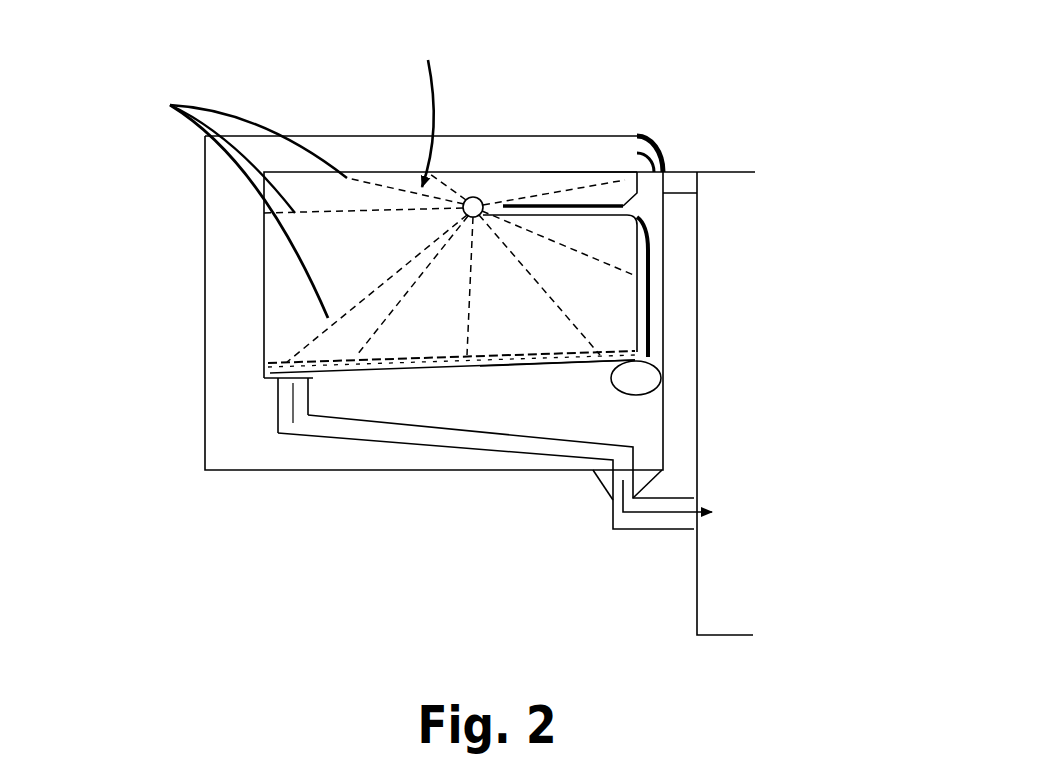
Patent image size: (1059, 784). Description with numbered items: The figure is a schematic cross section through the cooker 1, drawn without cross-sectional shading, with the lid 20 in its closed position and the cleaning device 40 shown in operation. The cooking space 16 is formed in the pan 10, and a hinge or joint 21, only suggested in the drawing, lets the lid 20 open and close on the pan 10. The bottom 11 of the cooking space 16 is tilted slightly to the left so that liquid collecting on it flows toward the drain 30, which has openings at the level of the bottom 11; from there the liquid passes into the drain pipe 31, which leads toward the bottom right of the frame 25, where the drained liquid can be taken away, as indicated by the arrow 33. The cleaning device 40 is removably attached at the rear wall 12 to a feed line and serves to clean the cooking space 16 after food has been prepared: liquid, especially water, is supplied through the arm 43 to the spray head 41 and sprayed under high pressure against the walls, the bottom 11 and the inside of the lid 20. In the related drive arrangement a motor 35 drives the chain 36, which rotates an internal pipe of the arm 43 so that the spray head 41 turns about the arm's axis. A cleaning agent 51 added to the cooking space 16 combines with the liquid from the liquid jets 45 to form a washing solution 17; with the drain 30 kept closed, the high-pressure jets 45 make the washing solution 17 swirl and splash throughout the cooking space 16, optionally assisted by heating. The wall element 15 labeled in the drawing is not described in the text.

The cooker 1 is at (251, 72).
The pan 10 is at (422, 110).
The bottom 11 is at (480, 377).
The rear wall 12 is at (648, 205).
The cooking chamber wall 15 is at (260, 250).
The cooking space 16 is at (489, 273).
The washing solution 17 is at (420, 368).
The lid 20 is at (411, 133).
The hinge or joint 21 is at (669, 148).
The frame 25 is at (701, 319).
The drain 30 is at (288, 366).
The drain pipe 31 is at (357, 428).
The arrow 33 is at (318, 425).
The motor 35 is at (640, 379).
The chain 36 is at (654, 277).
The cleaning device 40 is at (551, 188).
The spray head 41 is at (474, 194).
The arm 43 is at (584, 198).
The liquid jets 45 is at (236, 200).
The cleaning agent 51 is at (482, 345).